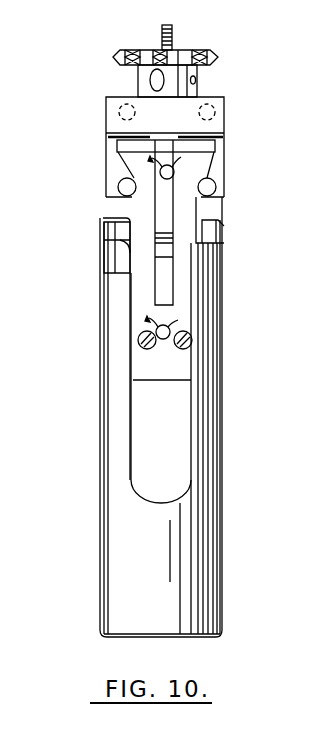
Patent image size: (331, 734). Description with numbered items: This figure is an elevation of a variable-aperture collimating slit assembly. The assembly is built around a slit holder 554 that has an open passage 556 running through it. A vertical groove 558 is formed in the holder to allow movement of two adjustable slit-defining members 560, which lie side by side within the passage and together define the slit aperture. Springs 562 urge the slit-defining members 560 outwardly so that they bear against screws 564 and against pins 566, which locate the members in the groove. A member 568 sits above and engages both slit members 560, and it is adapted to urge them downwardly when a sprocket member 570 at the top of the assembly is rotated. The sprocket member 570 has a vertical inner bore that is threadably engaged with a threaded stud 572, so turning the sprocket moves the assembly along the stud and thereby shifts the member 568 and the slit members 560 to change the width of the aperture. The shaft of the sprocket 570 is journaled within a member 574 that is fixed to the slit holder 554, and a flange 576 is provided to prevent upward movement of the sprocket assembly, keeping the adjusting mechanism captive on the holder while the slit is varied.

The slit holder 554 is at (215, 503).
The open passage 556 is at (167, 280).
The vertical groove 558 is at (190, 355).
The adjustable slit-defining members 560 is at (187, 292).
The springs 562 is at (148, 162).
The screws 564 is at (137, 333).
The pins 566 is at (213, 185).
The member 568 is at (205, 146).
The sprocket member 570 is at (210, 51).
The threaded stud 572 is at (172, 32).
The member 574 is at (226, 108).
The flange 576 is at (125, 136).